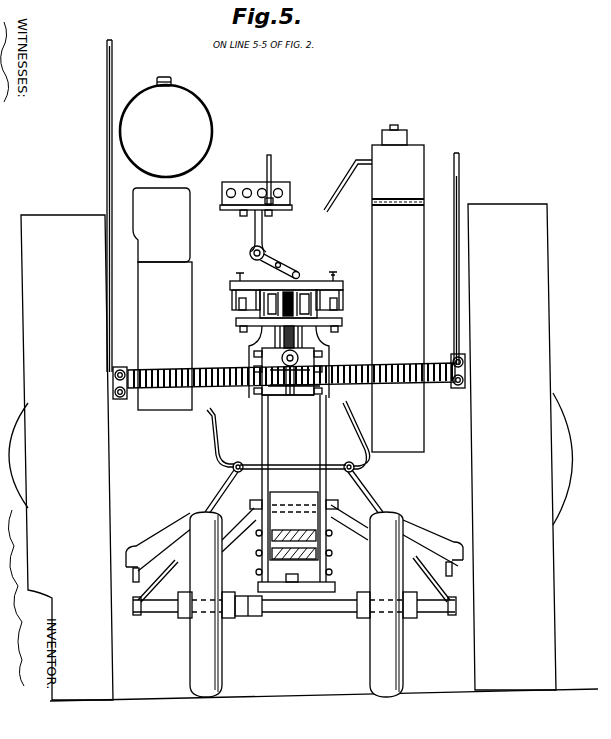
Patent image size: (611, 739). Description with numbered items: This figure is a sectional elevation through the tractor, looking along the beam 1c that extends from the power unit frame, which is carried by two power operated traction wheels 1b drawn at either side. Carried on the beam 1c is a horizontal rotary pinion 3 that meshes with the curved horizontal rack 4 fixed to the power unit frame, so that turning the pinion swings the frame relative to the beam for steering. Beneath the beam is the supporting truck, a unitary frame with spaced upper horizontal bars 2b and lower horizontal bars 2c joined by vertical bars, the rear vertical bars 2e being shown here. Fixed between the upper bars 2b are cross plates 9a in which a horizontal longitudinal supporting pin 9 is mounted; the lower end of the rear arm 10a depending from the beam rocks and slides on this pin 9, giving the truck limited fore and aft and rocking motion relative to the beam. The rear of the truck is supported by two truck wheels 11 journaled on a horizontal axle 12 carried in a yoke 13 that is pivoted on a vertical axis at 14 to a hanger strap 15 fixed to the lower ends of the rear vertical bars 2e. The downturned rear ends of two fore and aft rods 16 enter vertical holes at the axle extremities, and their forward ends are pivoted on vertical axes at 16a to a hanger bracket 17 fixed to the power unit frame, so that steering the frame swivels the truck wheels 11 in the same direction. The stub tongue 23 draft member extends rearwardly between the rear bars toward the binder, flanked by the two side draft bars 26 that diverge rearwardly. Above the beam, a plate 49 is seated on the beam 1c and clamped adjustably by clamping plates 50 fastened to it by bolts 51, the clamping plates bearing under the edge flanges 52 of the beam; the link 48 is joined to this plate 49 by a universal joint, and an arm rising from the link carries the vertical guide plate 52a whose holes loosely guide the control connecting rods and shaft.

The traction wheels 1b is at (288, 452).
The beam 1c is at (316, 293).
The upper horizontal bars 2b is at (300, 393).
The lower horizontal bars 2c is at (257, 548).
The rear vertical bars 2e is at (322, 444).
The rotary pinion 3 is at (296, 382).
The rack 4 is at (386, 369).
The supporting pins 9 is at (268, 386).
The cross plates 9a is at (312, 356).
The rear arm 10a is at (277, 333).
The truck wheels 11 is at (200, 656).
The axle 12 is at (162, 616).
The yoke 13 is at (250, 614).
The vertical pivot 14 is at (297, 600).
The hanger strap 15 is at (328, 590).
The fore and aft rods 16 is at (219, 495).
The rod pivots 16a is at (242, 459).
The hanger bracket 17 is at (216, 432).
The stub tongue 23 is at (302, 498).
The side draft bars 26 is at (156, 546).
The link 48 is at (250, 251).
The plate 49 is at (306, 281).
The clamping plates 50 is at (236, 294).
The bolts 51 is at (240, 277).
The edge flanges 52 is at (242, 301).
The guide plate 52a is at (241, 186).